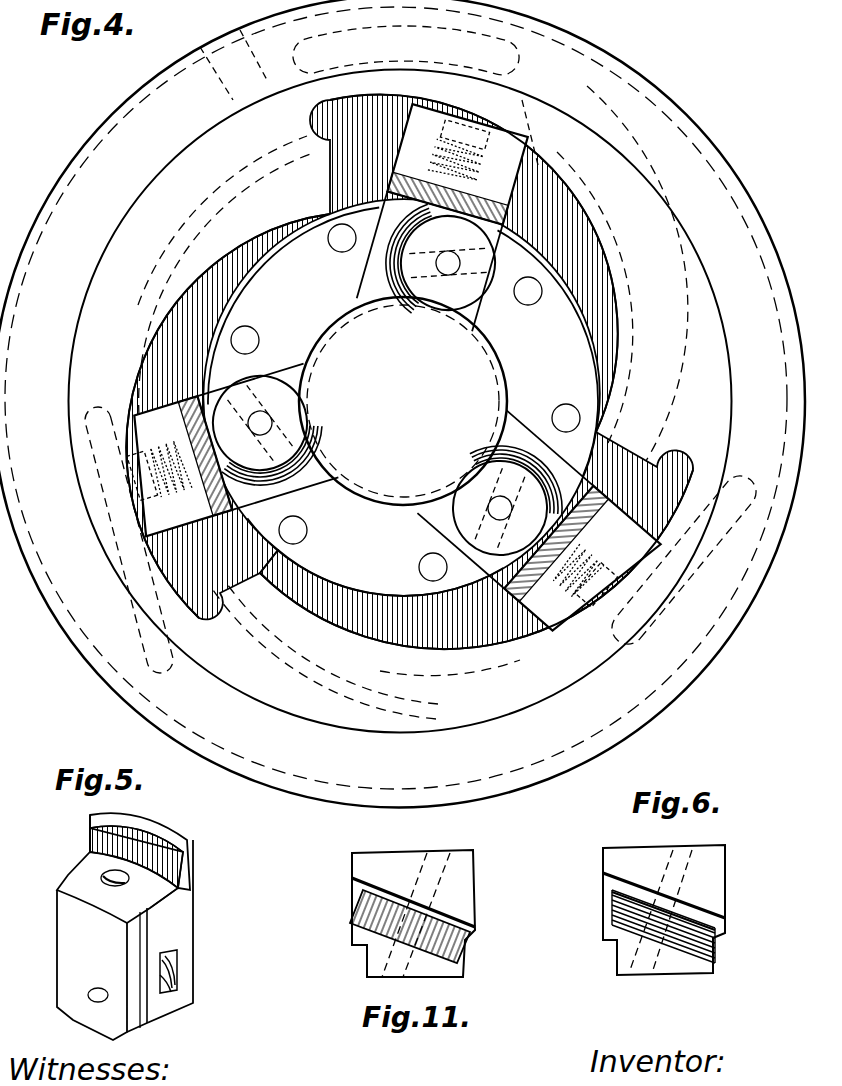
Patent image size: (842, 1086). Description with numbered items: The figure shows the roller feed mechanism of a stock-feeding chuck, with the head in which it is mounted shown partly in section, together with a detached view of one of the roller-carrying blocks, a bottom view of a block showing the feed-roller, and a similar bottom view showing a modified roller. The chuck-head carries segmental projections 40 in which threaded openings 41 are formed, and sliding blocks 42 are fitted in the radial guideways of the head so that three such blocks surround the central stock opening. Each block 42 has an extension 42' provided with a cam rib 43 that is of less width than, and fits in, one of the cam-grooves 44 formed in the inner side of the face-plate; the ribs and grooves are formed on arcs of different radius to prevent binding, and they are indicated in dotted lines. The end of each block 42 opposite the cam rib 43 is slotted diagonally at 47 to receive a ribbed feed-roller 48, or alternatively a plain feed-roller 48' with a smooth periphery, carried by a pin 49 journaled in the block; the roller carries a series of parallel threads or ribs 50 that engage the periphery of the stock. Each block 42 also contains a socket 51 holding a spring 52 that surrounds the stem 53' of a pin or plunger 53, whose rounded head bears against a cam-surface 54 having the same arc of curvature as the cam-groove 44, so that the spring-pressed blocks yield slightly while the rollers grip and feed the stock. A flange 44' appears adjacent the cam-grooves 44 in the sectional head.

In FIG. 4, the segmental projections 40 is at (403, 402).
In FIG. 4, the openings 41 is at (328, 239).
In FIG. 4, the sliding blocks 42 is at (385, 375).
In FIG. 5, the sliding blocks 42 is at (144, 940).
In FIG. 6, the sliding blocks 42 is at (664, 910).
In FIG. 11, the sliding blocks 42 is at (413, 913).
In FIG. 5, the extension 42' is at (165, 845).
In FIG. 4, the cam rib 43 is at (530, 112).
In FIG. 5, the cam rib 43 is at (170, 824).
In FIG. 4, the cam-grooves 44 is at (402, 404).
In FIG. 4, the casing flange 44' is at (450, 679).
In FIG. 5, the diagonal slot 47 is at (176, 985).
In FIG. 6, the diagonal slot 47 is at (718, 932).
In FIG. 11, the diagonal slot 47 is at (474, 935).
In FIG. 4, the ribbed feed-roller 48 is at (383, 389).
In FIG. 5, the ribbed feed-roller 48 is at (200, 966).
In FIG. 6, the ribbed feed-roller 48 is at (643, 926).
In FIG. 11, the plain feed-roller 48' is at (390, 926).
In FIG. 4, the pin 49 is at (451, 258).
In FIG. 5, the pin 49 is at (99, 988).
In FIG. 6, the pin 49 is at (687, 868).
In FIG. 11, the pin 49 is at (440, 878).
In FIG. 4, the parallel threads or ribs 50 is at (412, 226).
In FIG. 5, the parallel threads or ribs 50 is at (172, 992).
In FIG. 6, the parallel threads or ribs 50 is at (713, 918).
In FIG. 5, the socket 51 is at (105, 875).
In FIG. 4, the spring 52 is at (447, 158).
In FIG. 4, the pin or plunger 53 is at (383, 354).
In FIG. 4, the stem 53' is at (277, 291).
In FIG. 4, the cam-surface 54 is at (192, 322).